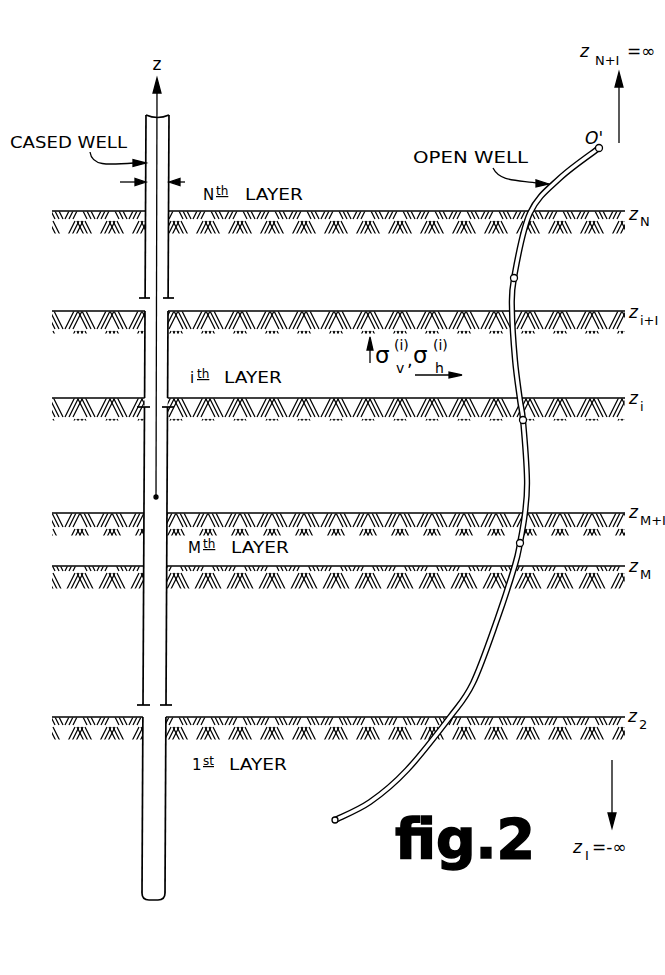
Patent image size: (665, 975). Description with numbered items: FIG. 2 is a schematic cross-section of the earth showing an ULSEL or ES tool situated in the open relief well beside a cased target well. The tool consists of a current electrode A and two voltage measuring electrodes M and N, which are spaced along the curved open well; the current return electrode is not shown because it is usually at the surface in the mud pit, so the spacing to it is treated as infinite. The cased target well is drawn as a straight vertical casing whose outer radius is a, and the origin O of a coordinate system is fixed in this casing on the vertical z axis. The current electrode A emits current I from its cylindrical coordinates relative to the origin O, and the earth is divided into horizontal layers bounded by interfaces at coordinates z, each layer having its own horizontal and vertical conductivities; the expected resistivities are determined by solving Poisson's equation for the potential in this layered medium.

The outer radius of the target well casing a is at (150, 182).
The origin O is at (152, 508).
The voltage measuring electrode N is at (445, 279).
The voltage measuring electrode M is at (453, 432).
The current electrode A is at (491, 546).